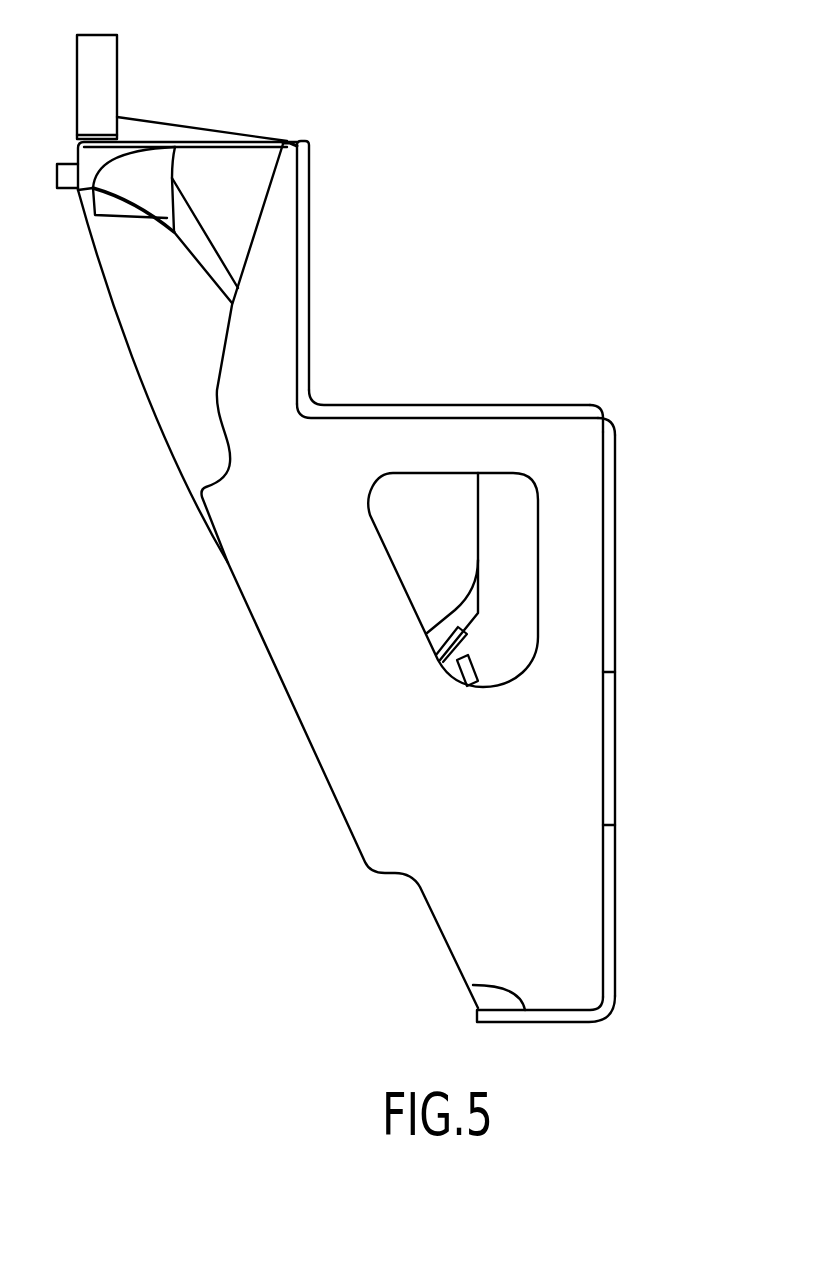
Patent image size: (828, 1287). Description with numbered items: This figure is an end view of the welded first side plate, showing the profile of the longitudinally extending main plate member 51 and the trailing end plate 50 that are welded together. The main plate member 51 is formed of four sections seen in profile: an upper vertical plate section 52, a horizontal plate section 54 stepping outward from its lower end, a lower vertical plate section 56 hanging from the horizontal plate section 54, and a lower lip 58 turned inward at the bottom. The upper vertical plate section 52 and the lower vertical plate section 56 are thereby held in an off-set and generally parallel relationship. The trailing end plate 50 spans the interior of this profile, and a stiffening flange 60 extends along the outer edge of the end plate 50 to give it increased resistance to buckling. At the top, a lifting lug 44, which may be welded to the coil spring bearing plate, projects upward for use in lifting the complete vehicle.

The lifting lug 44 is at (105, 78).
The trailing end plate 50 is at (485, 754).
The longitudinally extending main plate member 51 is at (607, 409).
The upper vertical plate section 52 is at (310, 262).
The horizontal plate section 54 is at (460, 403).
The lower vertical plate section 56 is at (615, 597).
The lower lip 58 is at (490, 985).
The stiffening flange 60 is at (268, 622).